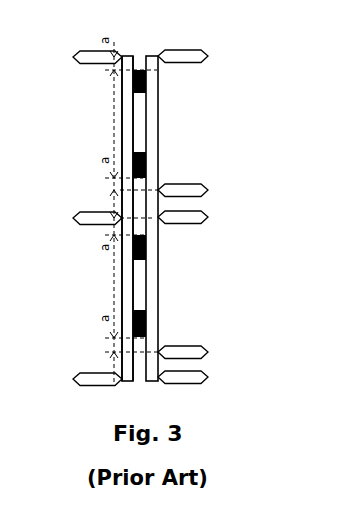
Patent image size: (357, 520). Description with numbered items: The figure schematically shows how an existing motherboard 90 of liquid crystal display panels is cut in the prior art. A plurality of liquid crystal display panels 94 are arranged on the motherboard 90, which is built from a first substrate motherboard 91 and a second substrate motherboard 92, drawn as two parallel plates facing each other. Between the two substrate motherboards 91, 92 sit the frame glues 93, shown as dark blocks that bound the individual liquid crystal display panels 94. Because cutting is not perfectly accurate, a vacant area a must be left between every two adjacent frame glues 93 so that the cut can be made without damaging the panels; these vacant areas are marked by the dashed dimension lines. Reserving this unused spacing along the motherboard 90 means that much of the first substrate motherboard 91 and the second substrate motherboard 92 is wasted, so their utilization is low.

The motherboard of liquid crystal display panels 90 is at (132, 107).
The liquid crystal display panel 94 is at (130, 128).
The first substrate motherboard 91 is at (127, 290).
The second substrate motherboard 92 is at (155, 295).
The frame glue 93 is at (147, 162).